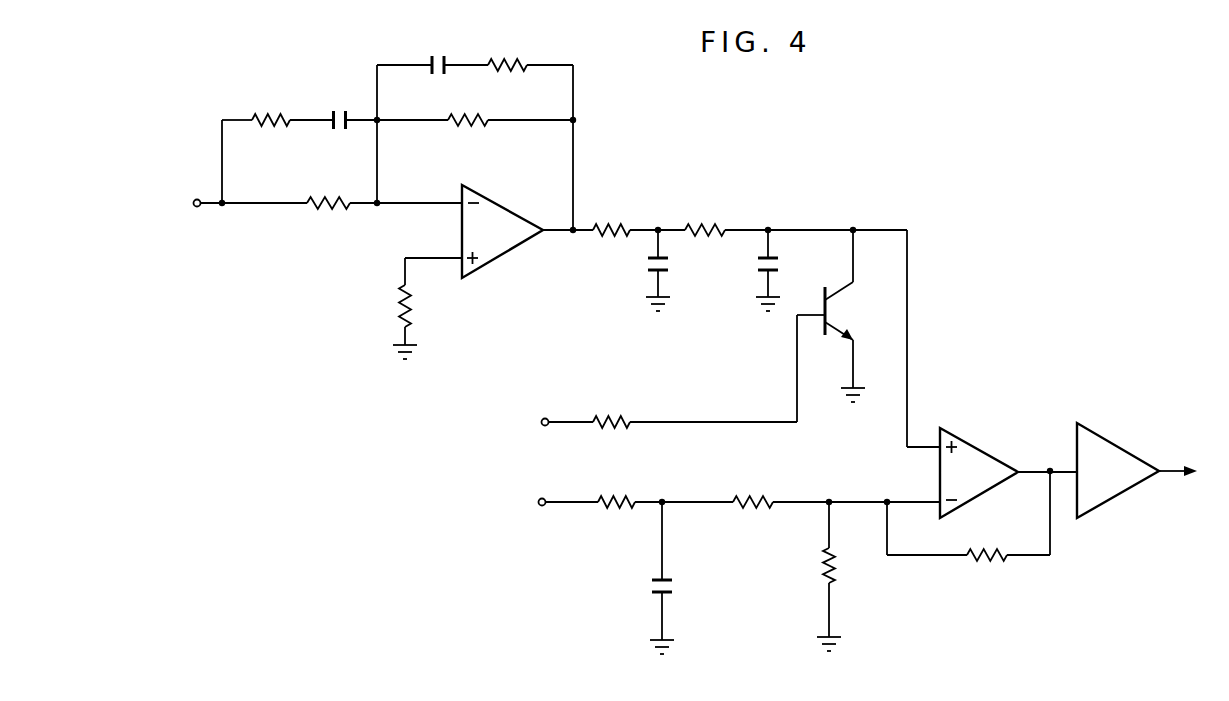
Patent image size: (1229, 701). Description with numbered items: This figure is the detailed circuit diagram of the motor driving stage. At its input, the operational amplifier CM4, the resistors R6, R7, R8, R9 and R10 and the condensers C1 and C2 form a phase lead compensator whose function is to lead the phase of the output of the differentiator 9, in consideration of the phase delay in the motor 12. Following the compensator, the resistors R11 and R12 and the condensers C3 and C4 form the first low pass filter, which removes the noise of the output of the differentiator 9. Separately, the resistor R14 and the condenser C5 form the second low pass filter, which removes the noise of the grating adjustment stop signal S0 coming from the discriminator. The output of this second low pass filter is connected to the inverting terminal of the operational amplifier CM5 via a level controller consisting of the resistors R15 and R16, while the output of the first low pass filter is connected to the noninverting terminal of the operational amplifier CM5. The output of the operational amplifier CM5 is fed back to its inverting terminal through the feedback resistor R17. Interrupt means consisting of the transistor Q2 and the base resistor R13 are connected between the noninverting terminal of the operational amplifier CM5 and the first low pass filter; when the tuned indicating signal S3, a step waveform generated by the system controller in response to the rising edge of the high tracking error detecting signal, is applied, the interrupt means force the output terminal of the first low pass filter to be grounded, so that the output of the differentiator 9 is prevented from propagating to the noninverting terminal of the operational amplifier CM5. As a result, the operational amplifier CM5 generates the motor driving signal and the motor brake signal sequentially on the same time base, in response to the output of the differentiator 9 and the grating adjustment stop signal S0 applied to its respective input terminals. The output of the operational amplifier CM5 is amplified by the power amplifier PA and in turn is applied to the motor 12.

The differentiator 9 is at (182, 205).
The resistor R7 is at (271, 104).
The condenser C1 is at (342, 106).
The resistor R6 is at (328, 188).
The condenser C2 is at (440, 50).
The resistor R9 is at (507, 49).
The resistor R8 is at (468, 104).
The operational amplifier CM4 is at (502, 237).
The resistor R10 is at (426, 306).
The resistor R11 is at (613, 214).
The condenser C3 is at (673, 272).
The resistor R12 is at (706, 212).
The condenser C4 is at (783, 272).
The transistor Q2 is at (848, 309).
The base resistor R13 is at (613, 405).
The tuned indicating signal S3 is at (527, 425).
The grating adjustment stop signal S0 is at (525, 508).
The resistor R14 is at (617, 487).
The resistor R15 is at (753, 485).
The condenser C5 is at (679, 590).
The resistor R16 is at (850, 567).
The operational amplifier CM5 is at (979, 478).
The feedback resistor R17 is at (988, 575).
The power amplifier PA is at (1118, 470).
The motor 12 is at (1205, 473).